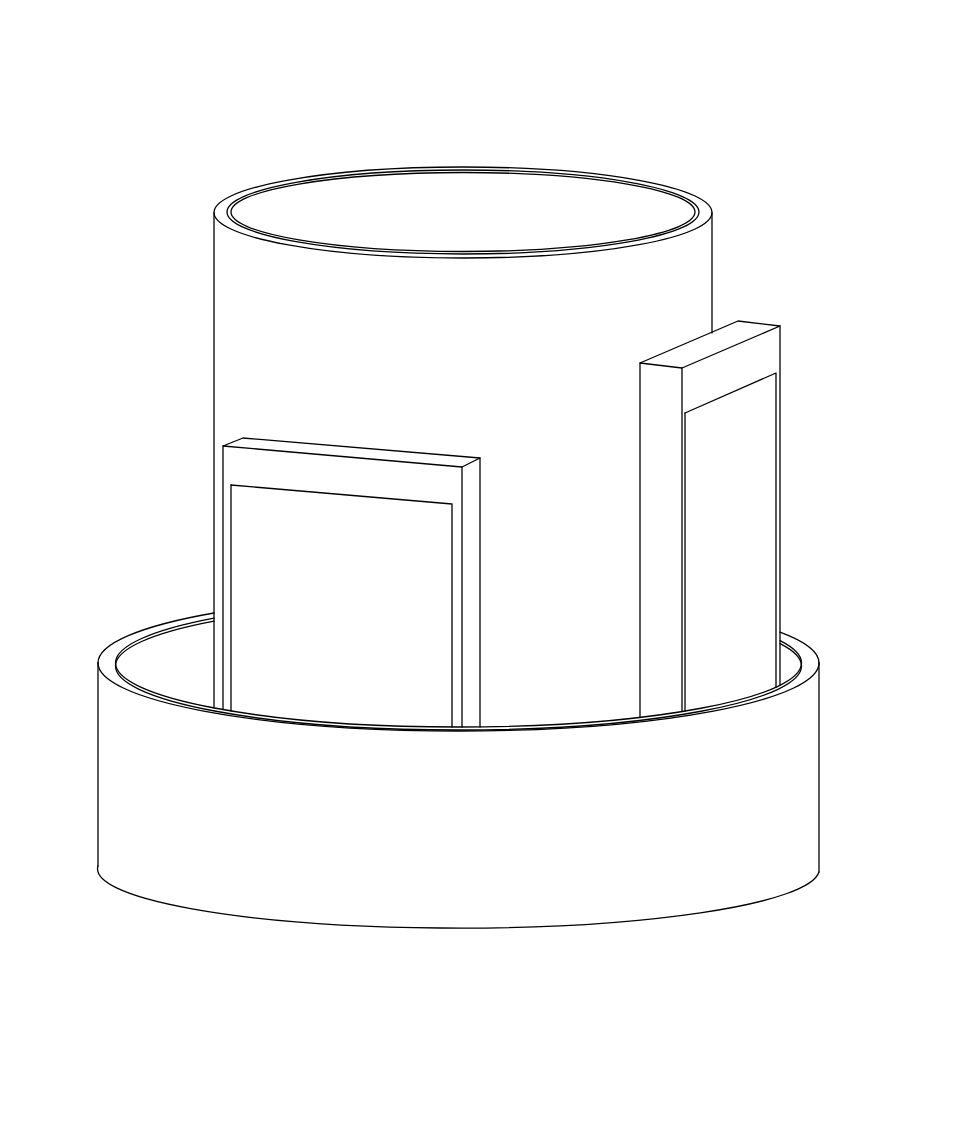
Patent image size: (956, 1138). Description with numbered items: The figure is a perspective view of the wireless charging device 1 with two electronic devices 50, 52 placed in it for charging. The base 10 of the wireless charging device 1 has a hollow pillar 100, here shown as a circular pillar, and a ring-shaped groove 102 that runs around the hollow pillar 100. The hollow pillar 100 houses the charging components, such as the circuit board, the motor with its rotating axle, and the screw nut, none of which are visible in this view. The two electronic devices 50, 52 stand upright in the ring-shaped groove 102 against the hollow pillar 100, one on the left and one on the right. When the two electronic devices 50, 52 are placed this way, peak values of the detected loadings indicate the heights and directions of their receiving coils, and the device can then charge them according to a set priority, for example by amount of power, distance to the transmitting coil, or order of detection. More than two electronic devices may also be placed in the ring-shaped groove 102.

The wireless charging device 1 is at (590, 68).
The base 10 is at (87, 412).
The hollow pillar 100 is at (214, 436).
The ring-shaped groove 102 is at (175, 660).
The electronic device 50 is at (782, 337).
The electronic device 52 is at (328, 446).